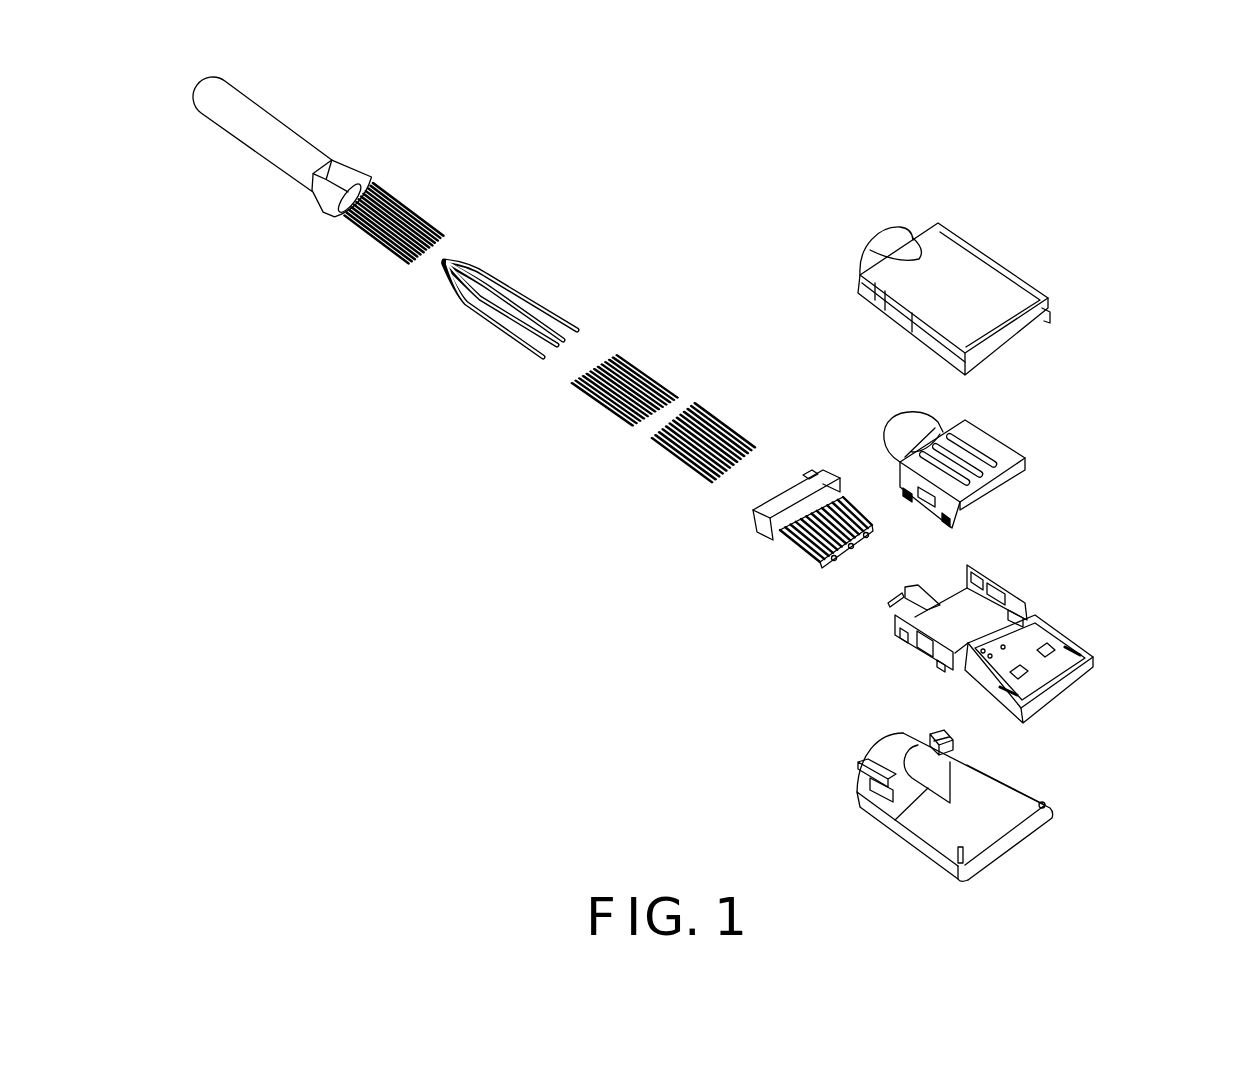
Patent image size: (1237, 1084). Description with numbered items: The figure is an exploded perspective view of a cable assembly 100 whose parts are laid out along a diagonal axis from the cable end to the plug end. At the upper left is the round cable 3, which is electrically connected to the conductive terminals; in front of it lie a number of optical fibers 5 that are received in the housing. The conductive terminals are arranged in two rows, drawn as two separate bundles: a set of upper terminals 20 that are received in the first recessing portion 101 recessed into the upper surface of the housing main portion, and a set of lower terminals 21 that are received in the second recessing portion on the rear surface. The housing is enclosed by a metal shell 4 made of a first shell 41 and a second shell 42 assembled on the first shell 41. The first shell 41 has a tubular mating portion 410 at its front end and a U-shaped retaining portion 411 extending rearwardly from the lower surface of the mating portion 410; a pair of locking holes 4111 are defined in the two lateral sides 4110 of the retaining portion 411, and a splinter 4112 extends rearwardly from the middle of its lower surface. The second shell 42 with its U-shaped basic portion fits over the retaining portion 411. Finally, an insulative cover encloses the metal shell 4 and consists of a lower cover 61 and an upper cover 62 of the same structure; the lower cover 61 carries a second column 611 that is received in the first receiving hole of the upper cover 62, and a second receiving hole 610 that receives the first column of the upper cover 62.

The cable assembly 100 is at (875, 861).
The round cable 3 is at (370, 160).
The optical fibers 5 is at (552, 293).
The lower terminals 21 is at (657, 370).
The upper terminals 20 is at (727, 410).
The first recessing portion 101 is at (790, 542).
The upper cover 62 is at (993, 253).
The metal shell 4 is at (1143, 678).
The second shell 42 is at (1003, 425).
The first shell 41 is at (968, 614).
The U-shaped retaining portion 411 is at (962, 620).
The lateral sides 4110 is at (868, 656).
The locking holes 4111 is at (923, 652).
The splinter 4112 is at (910, 590).
The tubular mating portion 410 is at (1059, 655).
The lower cover 61 is at (954, 799).
The second column 611 is at (912, 737).
The second receiving hole 610 is at (835, 775).